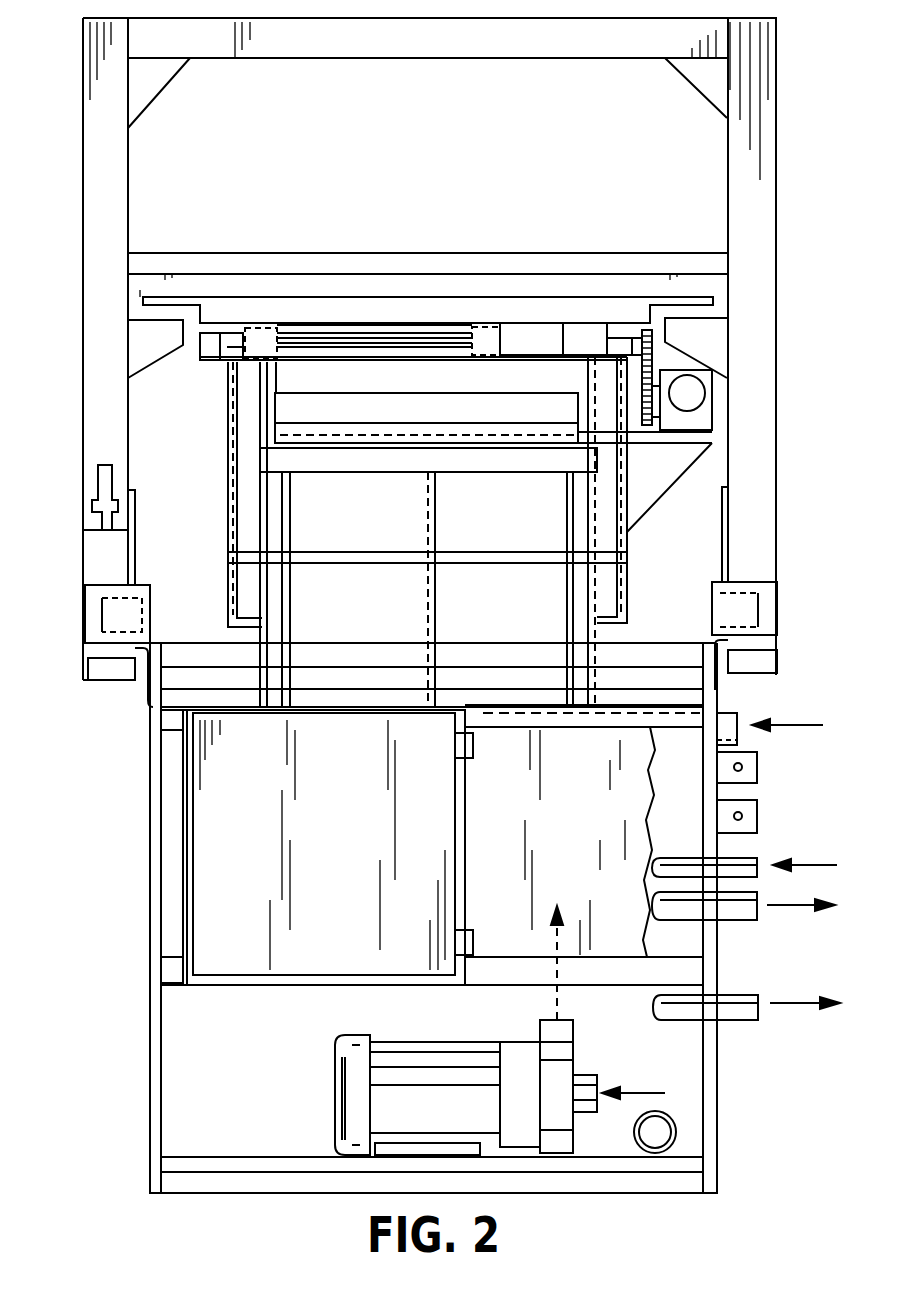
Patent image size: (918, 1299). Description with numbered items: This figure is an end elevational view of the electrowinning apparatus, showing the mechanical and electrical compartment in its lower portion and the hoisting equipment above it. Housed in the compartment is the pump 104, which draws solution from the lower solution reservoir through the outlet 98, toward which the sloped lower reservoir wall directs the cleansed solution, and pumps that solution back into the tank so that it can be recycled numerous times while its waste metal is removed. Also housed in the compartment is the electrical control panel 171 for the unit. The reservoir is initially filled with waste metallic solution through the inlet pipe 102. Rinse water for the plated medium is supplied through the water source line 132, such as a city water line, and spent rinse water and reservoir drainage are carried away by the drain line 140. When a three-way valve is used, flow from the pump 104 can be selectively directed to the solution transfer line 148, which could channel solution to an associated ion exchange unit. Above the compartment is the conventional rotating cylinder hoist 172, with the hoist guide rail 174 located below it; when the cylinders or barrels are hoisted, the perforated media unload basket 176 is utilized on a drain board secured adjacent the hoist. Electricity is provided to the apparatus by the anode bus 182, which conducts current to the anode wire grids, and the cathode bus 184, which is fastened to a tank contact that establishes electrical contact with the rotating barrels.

The rotating cylinder hoist 172 is at (103, 192).
The perforated media unload basket 176 is at (317, 405).
The hoist guide rail 174 is at (93, 646).
The electrical control panel 171 is at (200, 815).
The inlet pipe 102 is at (720, 725).
The anode bus 182 is at (752, 760).
The cathode bus 184 is at (752, 808).
The water source line 132 is at (742, 865).
The drain line 140 is at (727, 908).
The solution transfer line 148 is at (725, 1005).
The pump 104 is at (380, 1093).
The outlet 98 is at (660, 1125).